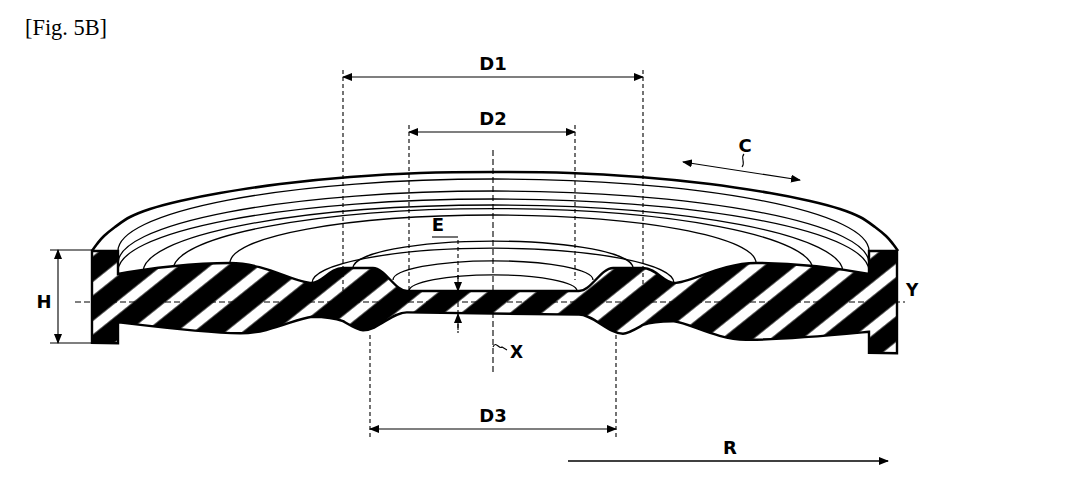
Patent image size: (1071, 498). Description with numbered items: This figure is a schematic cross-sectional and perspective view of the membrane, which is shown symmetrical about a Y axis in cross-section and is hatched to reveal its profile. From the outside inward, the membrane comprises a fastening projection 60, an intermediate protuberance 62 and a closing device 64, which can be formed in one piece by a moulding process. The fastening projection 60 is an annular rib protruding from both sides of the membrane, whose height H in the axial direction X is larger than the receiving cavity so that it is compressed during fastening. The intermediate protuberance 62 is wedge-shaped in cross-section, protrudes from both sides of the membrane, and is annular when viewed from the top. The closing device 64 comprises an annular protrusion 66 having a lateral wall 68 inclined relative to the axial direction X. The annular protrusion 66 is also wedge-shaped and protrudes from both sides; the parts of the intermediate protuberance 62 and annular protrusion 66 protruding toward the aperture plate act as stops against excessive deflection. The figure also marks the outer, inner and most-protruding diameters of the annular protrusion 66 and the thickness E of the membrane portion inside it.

The fastening projection 60 is at (102, 344).
The intermediate protuberance 62 is at (232, 335).
The closing device 64 is at (433, 315).
The annular protrusion 66 is at (353, 332).
The lateral wall 68 is at (333, 329).